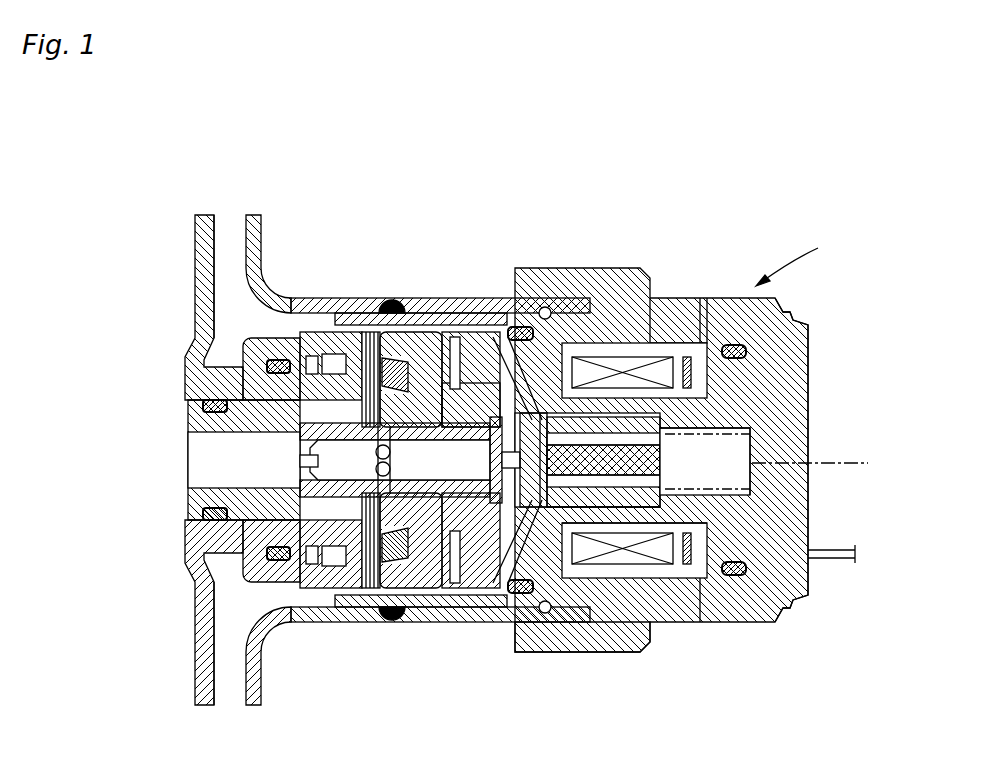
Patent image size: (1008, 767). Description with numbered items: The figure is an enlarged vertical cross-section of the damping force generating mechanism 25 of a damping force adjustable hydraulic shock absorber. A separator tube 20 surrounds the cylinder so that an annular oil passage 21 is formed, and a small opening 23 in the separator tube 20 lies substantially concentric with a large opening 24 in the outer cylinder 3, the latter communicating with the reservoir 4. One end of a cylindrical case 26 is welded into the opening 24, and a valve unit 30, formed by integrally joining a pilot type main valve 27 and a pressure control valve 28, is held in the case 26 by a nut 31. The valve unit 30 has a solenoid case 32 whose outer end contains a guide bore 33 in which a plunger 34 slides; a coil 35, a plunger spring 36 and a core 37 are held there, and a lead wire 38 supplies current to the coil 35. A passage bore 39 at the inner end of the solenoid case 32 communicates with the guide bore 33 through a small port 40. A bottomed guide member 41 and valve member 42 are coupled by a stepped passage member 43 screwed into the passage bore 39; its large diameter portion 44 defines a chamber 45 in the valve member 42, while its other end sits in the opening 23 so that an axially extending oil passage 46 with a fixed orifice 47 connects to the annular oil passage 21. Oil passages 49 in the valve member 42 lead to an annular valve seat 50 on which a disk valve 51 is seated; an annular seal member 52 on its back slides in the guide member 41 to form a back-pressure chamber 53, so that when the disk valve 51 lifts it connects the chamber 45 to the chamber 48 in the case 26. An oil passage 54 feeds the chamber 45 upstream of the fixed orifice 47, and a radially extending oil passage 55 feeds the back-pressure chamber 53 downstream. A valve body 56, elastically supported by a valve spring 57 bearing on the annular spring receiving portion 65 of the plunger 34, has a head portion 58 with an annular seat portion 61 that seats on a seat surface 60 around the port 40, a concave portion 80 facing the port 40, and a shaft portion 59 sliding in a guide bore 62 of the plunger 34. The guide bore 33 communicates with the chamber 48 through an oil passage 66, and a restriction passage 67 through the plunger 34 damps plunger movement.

The outer cylinder 3 is at (254, 228).
The reservoir 4 is at (232, 235).
The separator tube 20 is at (207, 215).
The annular oil passage 21 is at (168, 482).
The opening 23 is at (225, 518).
The opening 24 is at (284, 300).
The damping force generating mechanism 25 is at (800, 254).
The cylindrical case 26 is at (470, 345).
The main valve 27 is at (370, 324).
The pressure control valve 28 is at (555, 330).
The valve unit 30 is at (422, 322).
The nut 31 is at (640, 300).
The solenoid case 32 is at (655, 300).
The guide bore 33 is at (530, 625).
The plunger 34 is at (640, 490).
The coil 35 is at (618, 567).
The plunger spring 36 is at (827, 468).
The core 37 is at (773, 497).
The lead wire 38 is at (830, 560).
The passage bore 39 is at (445, 615).
The port 40 is at (470, 606).
The guide member 41 is at (400, 608).
The valve member 42 is at (297, 573).
The passage member 43 is at (245, 375).
The large diameter portion 44 is at (275, 570).
The chamber 45 is at (312, 365).
The axially extending oil passage 46 is at (215, 404).
The fixed orifice 47 is at (305, 462).
The chamber 48 is at (450, 375).
The oil passages 49 is at (332, 370).
The annular valve seat 50 is at (355, 332).
The disk valve 51 is at (390, 332).
The annular seal member 52 is at (396, 358).
The back-pressure chamber 53 is at (365, 600).
The oil passage 54 is at (255, 418).
The radially extending oil passage 55 is at (420, 600).
The valve body 56 is at (525, 330).
The valve spring 57 is at (590, 420).
The head portion 58 is at (600, 565).
The shaft portion 59 is at (745, 420).
The seat surface 60 is at (505, 590).
The annular seat portion 61 is at (510, 400).
The guide bore 62 is at (748, 440).
The annular spring receiving portion 65 is at (605, 420).
The oil passage 66 is at (493, 340).
The restriction passage 67 is at (688, 300).
The concave portion 80 is at (462, 380).